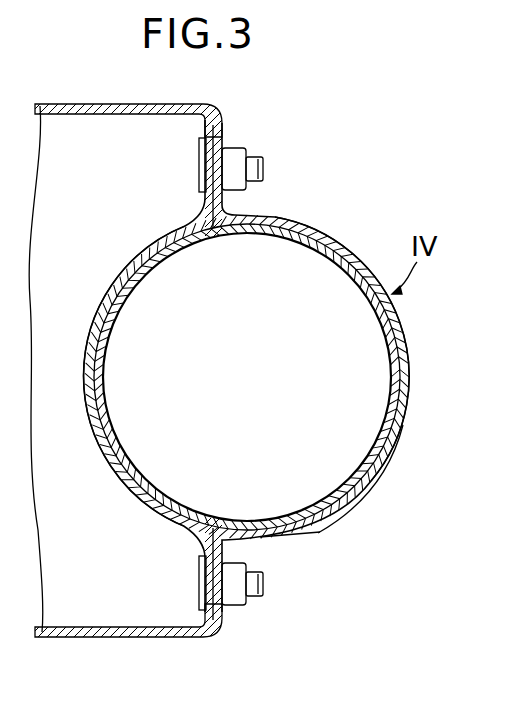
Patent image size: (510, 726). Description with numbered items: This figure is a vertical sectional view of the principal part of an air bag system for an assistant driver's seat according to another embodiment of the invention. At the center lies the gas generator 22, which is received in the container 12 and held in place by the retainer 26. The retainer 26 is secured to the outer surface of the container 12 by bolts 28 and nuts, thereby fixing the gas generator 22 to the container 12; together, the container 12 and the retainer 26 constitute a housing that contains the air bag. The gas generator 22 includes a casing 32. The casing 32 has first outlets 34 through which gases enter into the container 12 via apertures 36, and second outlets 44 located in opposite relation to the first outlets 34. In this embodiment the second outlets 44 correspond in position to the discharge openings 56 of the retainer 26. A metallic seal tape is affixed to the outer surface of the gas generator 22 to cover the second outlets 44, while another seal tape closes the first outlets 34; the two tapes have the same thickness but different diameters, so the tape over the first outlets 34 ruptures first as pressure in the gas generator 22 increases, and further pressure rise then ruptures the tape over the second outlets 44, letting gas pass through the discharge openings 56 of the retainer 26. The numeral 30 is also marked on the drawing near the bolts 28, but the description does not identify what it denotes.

The container 12 is at (128, 640).
The gas generator 22 is at (314, 530).
The retainer 26 is at (370, 470).
The bolts 28 is at (262, 160).
The flange 30 is at (240, 147).
The casing 32 is at (150, 490).
The first outlets 34 is at (178, 350).
The apertures 36 is at (96, 322).
The second outlets 44 is at (378, 332).
The discharge openings 56 is at (464, 328).